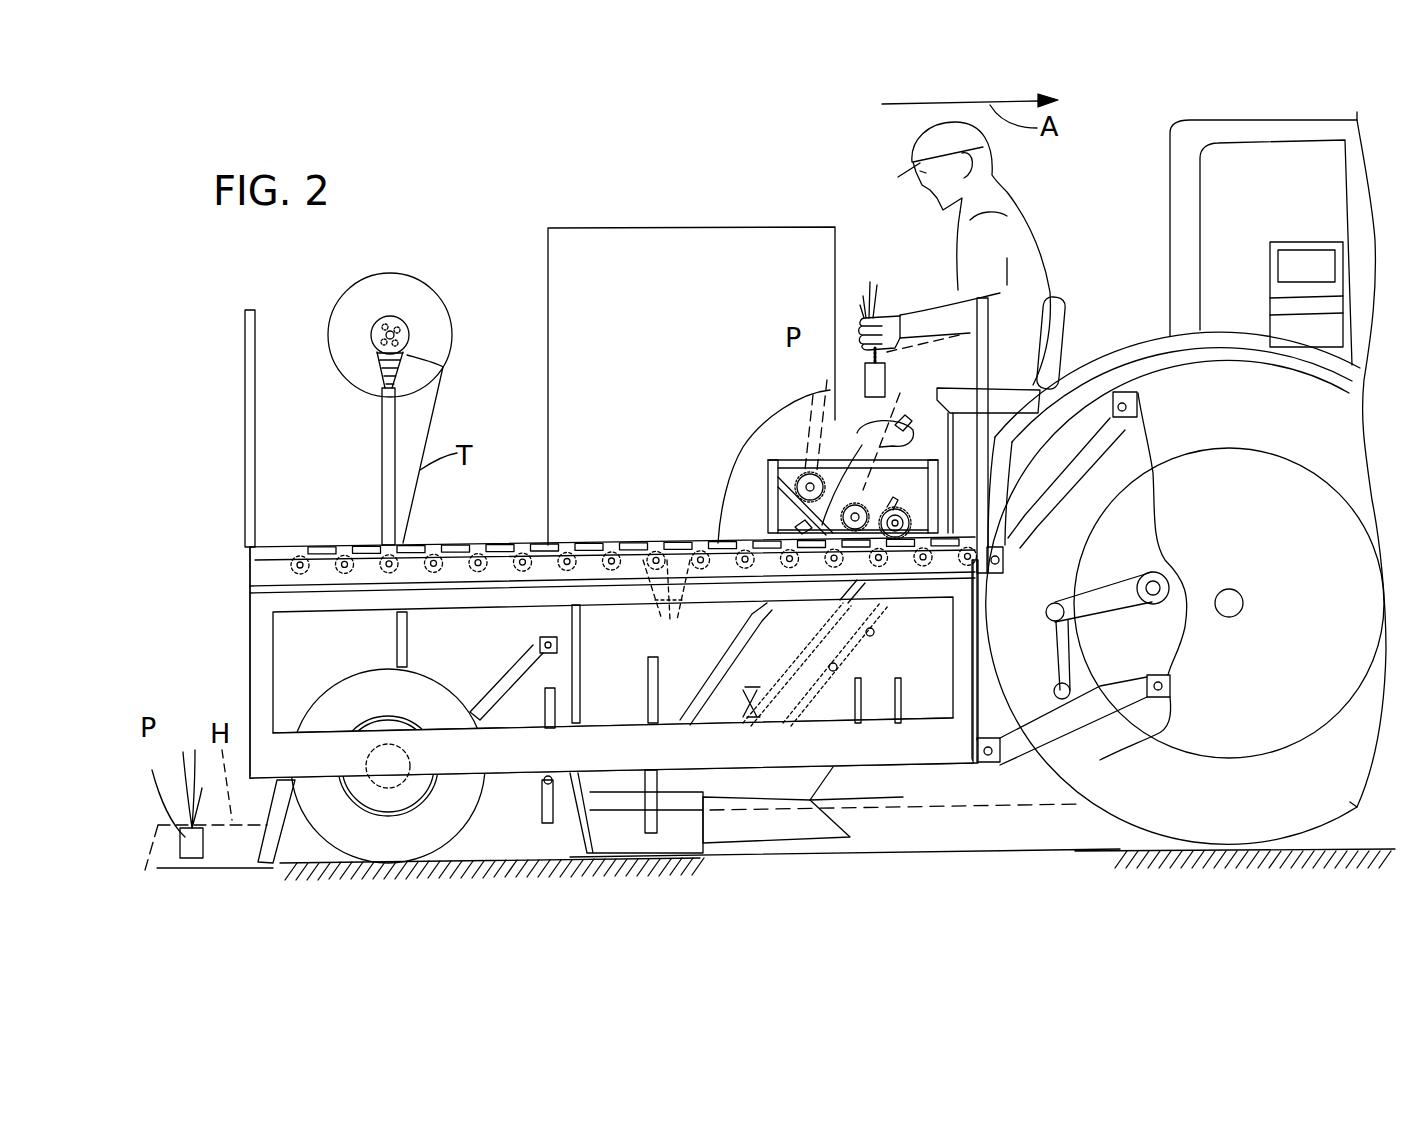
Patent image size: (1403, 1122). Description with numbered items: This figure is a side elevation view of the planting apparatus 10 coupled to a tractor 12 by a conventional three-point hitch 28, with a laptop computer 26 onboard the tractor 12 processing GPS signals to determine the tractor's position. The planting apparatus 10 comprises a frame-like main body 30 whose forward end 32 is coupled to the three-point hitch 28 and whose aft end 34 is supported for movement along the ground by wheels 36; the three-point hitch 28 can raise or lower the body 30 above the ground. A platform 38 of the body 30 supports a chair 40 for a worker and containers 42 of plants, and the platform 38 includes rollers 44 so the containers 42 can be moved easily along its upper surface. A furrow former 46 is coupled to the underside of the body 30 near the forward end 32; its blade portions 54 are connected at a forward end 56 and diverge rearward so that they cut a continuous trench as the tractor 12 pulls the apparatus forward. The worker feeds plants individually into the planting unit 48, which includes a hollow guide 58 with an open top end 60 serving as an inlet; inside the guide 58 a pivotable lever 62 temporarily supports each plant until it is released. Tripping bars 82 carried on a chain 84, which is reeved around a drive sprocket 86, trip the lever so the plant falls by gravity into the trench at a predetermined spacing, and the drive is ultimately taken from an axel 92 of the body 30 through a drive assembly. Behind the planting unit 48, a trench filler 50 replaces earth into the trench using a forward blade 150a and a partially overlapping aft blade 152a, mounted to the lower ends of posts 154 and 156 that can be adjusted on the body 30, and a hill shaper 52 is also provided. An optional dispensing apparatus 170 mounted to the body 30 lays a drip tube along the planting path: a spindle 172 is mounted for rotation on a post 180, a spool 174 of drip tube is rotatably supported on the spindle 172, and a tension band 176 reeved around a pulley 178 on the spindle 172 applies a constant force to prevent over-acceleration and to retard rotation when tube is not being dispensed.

The planting apparatus 10 is at (648, 185).
The tractor 12 is at (1230, 130).
The laptop computer 26 is at (1305, 265).
The three-point hitch 28 is at (1062, 530).
The main body 30 is at (470, 600).
The forward end 32 is at (955, 635).
The aft end 34 is at (250, 645).
The wheels 36 is at (400, 843).
The platform 38 is at (352, 557).
The chair 40 is at (1062, 328).
The containers 42 is at (583, 243).
The rollers 44 is at (666, 606).
The furrow former 46 is at (812, 801).
The planting unit 48 is at (873, 486).
The trench filler 50 is at (603, 830).
The hill shaper 52 is at (295, 840).
The blade portions 54 is at (768, 828).
The forward end 56 is at (840, 823).
The hollow guide 58 is at (810, 334).
The open top end 60 is at (867, 423).
The pivotable lever 62 is at (760, 706).
The tripping bars 82 is at (838, 667).
The chain 84 is at (872, 632).
The drive sprocket 86 is at (913, 508).
The axel 92 is at (385, 762).
The forward blade 150a is at (680, 835).
The aft blade 152a is at (557, 840).
The post 154 is at (648, 668).
The post 156 is at (556, 693).
The dispensing apparatus 170 is at (391, 357).
The spindle 172 is at (373, 325).
The spool 174 is at (385, 283).
The tension band 176 is at (407, 363).
The pulley 178 is at (412, 317).
The post 180 is at (393, 418).